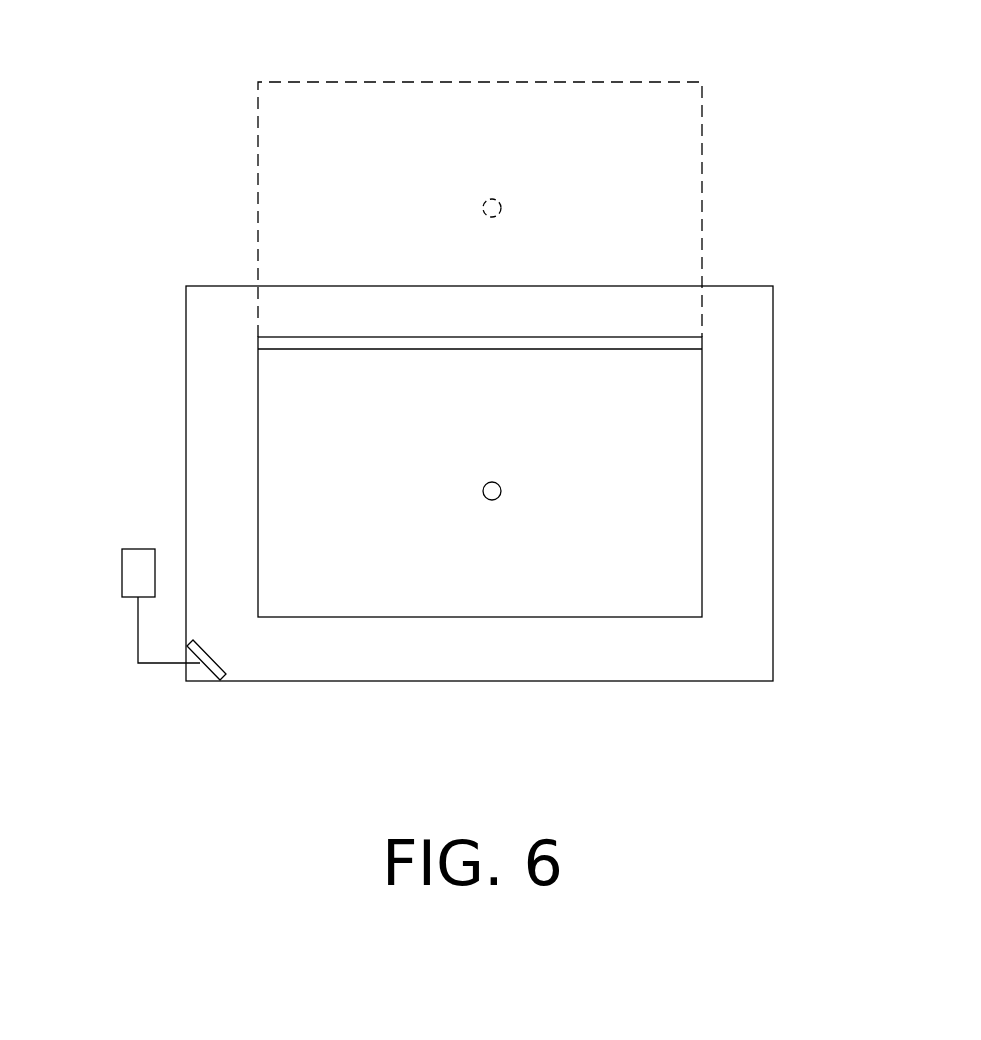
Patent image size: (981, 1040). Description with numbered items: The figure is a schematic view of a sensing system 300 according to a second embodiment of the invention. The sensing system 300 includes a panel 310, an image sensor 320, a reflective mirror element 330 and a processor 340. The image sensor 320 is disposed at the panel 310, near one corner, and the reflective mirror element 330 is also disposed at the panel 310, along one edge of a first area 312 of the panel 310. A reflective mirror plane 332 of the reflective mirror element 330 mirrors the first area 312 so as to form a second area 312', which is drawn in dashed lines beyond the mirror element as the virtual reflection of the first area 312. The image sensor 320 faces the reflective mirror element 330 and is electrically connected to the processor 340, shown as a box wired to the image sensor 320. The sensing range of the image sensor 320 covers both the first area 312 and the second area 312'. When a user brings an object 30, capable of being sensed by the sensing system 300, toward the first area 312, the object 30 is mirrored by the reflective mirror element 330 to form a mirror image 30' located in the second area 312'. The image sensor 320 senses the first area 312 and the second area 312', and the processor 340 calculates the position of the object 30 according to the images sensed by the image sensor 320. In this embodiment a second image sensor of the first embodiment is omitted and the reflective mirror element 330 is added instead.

The sensing system 300 is at (753, 781).
The panel 310 is at (766, 551).
The first area 312 is at (549, 477).
The second area 312' is at (488, 169).
The image sensor 320 is at (220, 668).
The reflective mirror element 330 is at (690, 343).
The reflective mirror plane 332 is at (600, 350).
The processor 340 is at (122, 568).
The object 30 is at (458, 603).
The mirror image 30' is at (454, 115).